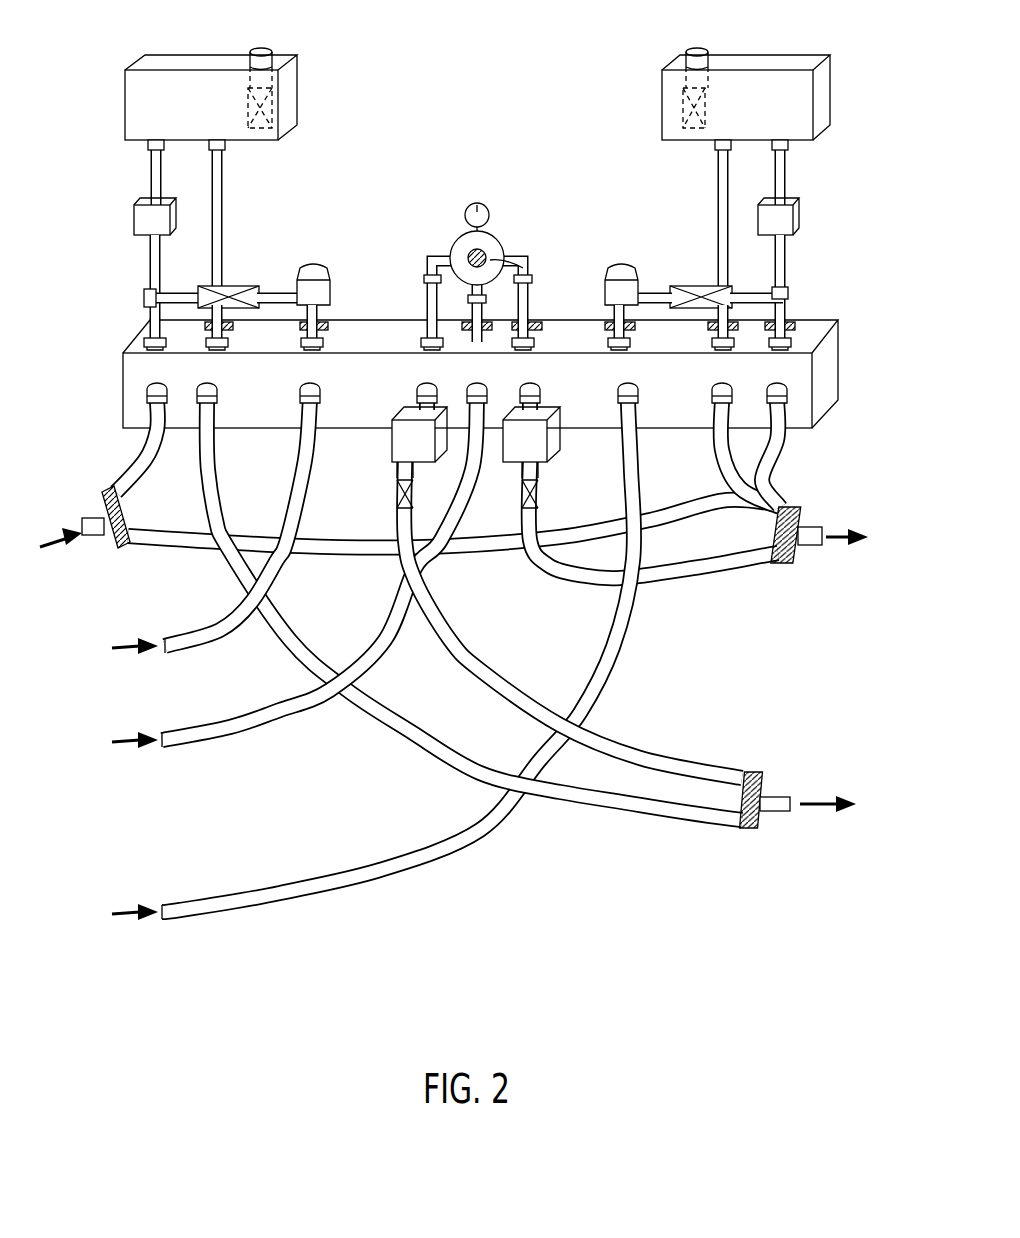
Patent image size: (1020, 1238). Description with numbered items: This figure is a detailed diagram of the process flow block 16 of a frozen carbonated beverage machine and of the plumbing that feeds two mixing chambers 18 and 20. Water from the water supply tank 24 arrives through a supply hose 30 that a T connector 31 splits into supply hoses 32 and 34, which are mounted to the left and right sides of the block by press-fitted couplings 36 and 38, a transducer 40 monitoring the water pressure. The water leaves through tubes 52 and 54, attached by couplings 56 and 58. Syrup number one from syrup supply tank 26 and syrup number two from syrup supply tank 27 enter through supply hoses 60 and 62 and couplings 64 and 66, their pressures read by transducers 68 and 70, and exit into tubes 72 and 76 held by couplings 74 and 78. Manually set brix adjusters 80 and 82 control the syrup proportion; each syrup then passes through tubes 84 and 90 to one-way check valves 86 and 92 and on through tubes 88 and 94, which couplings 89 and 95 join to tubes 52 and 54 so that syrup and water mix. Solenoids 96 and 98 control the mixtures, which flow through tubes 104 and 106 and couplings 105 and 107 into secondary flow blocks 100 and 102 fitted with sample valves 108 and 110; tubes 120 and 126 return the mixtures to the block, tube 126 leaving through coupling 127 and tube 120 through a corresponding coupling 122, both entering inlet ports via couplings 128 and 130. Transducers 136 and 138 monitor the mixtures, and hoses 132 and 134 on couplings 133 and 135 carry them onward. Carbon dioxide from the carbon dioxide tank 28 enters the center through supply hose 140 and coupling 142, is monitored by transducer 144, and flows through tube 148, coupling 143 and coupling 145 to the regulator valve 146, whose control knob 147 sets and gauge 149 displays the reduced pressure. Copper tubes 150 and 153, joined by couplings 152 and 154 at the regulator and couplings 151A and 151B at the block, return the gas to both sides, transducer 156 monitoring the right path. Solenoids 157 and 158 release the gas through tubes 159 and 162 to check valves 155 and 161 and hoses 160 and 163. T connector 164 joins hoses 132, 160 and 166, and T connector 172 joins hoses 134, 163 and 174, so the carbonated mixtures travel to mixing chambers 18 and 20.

The process flow block 16 is at (123, 368).
The mixing chamber 18 is at (834, 858).
The mixing chamber 20 is at (834, 488).
The water supply tank 24 is at (69, 575).
The syrup supply tank 26 is at (108, 676).
The syrup supply tank 27 is at (104, 923).
The carbon dioxide tank 28 is at (106, 760).
The supply hose 30 is at (92, 522).
The T connector 31 is at (106, 496).
The supply hose 32 is at (138, 452).
The supply hose 34 is at (172, 548).
The coupling 36 is at (147, 396).
The coupling 38 is at (772, 395).
The transducer 40 is at (780, 322).
The tube 52 is at (150, 325).
The tube 54 is at (786, 260).
The coupling 56 is at (144, 343).
The coupling 58 is at (792, 326).
The supply hose 60 is at (218, 644).
The supply hose 62 is at (215, 908).
The coupling 64 is at (304, 395).
The coupling 66 is at (622, 395).
The transducer 68 is at (326, 322).
The transducer 70 is at (635, 325).
The tube 72 is at (305, 316).
The coupling 74 is at (301, 343).
The tube 76 is at (613, 330).
The coupling 78 is at (630, 343).
The brix adjuster 80 is at (292, 293).
The brix adjuster 82 is at (612, 275).
The tube 84 is at (320, 272).
The check valve 86 is at (230, 288).
The tube 88 is at (183, 292).
The coupling 89 is at (144, 292).
The tube 90 is at (660, 292).
The check valve 92 is at (705, 288).
The tube 94 is at (752, 292).
The coupling 95 is at (788, 290).
The solenoid 96 is at (145, 216).
The solenoid 98 is at (790, 216).
The secondary flow block 100 is at (125, 102).
The secondary flow block 102 is at (825, 80).
The tube 104 is at (150, 180).
The coupling 105 is at (148, 148).
The tube 106 is at (786, 178).
The coupling 107 is at (788, 148).
The sample valve 108 is at (268, 92).
The sample valve 110 is at (683, 108).
The tube 120 is at (224, 232).
The fitting 122 is at (225, 148).
The tube 126 is at (717, 178).
The coupling 127 is at (715, 148).
The coupling 128 is at (198, 329).
The coupling 130 is at (770, 345).
The hose 132 is at (722, 832).
The coupling 133 is at (201, 395).
The hose 134 is at (760, 490).
The coupling 135 is at (716, 395).
The transducer 136 is at (238, 330).
The transducer 138 is at (712, 343).
The supply hose 140 is at (470, 500).
The coupling 142 is at (460, 395).
The coupling 143 is at (462, 326).
The transducer 144 is at (470, 318).
The coupling 145 is at (494, 278).
The CO2 regulator valve 146 is at (473, 242).
The control knob 147 is at (470, 254).
The tube 148 is at (515, 262).
The gauge 149 is at (469, 212).
The copper tube 150 is at (430, 298).
The coupling 151A is at (421, 343).
The coupling 151B is at (534, 343).
The coupling 152 is at (426, 276).
The copper tube 153 is at (526, 300).
The coupling 154 is at (528, 278).
The check valve 155 is at (400, 500).
The transducer 156 is at (532, 322).
The solenoid 157 is at (398, 438).
The solenoid 158 is at (548, 435).
The tube 159 is at (404, 470).
The hose 160 is at (405, 532).
The check valve 161 is at (540, 495).
The tube 162 is at (540, 470).
The hose 163 is at (545, 528).
The T connector 164 is at (760, 782).
The hose 166 is at (770, 806).
The T connector 172 is at (784, 562).
The hose 174 is at (803, 542).